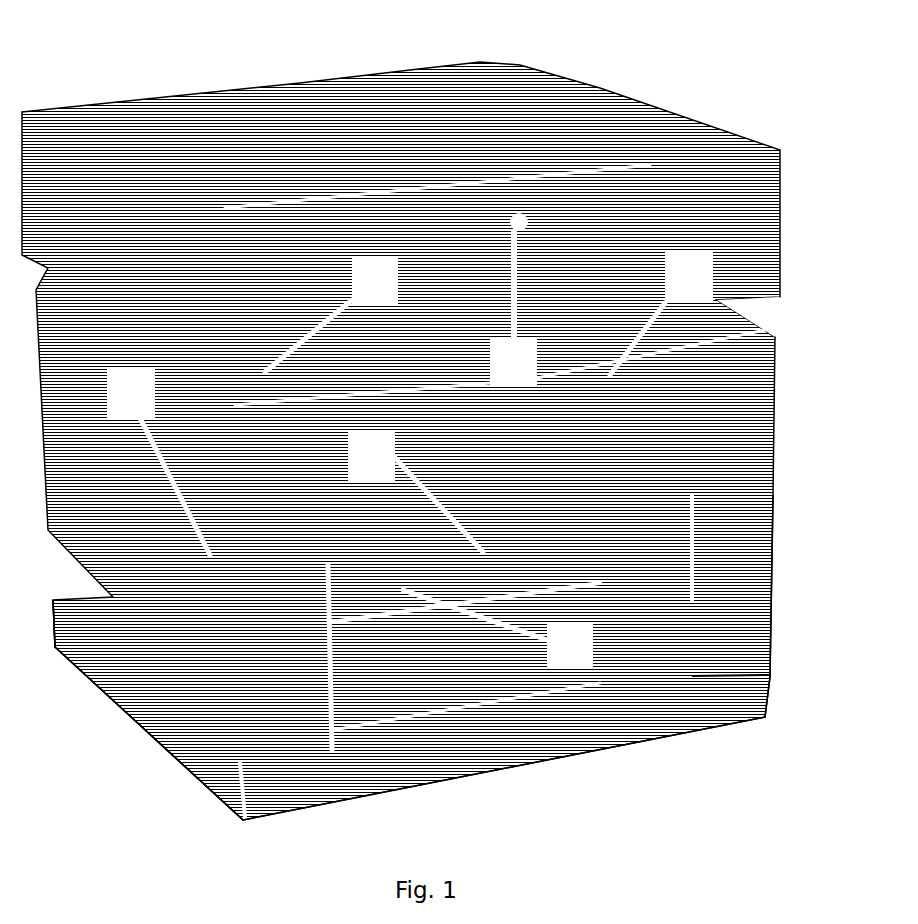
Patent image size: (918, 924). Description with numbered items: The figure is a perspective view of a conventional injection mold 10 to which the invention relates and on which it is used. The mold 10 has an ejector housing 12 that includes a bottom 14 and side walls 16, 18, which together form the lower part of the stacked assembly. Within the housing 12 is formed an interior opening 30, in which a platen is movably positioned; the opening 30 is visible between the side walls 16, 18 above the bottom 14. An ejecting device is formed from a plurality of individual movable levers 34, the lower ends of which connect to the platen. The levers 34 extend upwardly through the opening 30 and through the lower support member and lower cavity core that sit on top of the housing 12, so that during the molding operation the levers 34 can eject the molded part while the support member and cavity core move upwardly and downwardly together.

The injection mold 10 is at (697, 80).
The ejector housing 12 is at (778, 712).
The bottom 14 is at (411, 710).
The side wall 16 is at (282, 610).
The side wall 18 is at (731, 615).
The interior opening 30 is at (677, 513).
The movable levers 34 is at (150, 724).